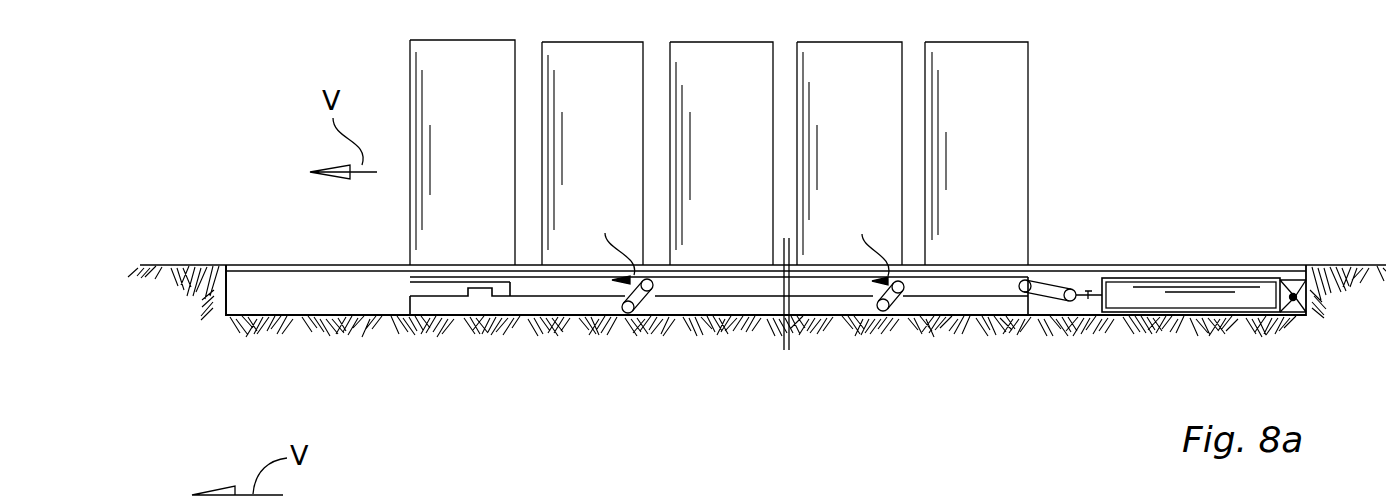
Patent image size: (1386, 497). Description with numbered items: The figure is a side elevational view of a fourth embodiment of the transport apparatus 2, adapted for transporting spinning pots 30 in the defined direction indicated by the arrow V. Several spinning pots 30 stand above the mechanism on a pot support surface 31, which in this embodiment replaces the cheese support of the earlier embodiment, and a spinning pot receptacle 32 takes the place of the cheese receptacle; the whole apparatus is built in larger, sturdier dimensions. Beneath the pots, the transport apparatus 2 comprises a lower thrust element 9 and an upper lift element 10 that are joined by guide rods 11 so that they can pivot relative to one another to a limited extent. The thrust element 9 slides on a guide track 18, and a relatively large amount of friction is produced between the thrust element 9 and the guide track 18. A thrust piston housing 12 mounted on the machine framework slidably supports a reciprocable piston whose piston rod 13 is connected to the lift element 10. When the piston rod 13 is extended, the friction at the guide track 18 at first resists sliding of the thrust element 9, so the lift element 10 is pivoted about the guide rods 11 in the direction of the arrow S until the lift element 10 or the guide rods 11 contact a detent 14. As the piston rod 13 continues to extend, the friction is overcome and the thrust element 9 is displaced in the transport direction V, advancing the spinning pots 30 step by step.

The transport apparatus 2 is at (757, 253).
The thrust element 9 is at (563, 303).
The lift element 10 is at (740, 285).
The guide rods 11 is at (649, 291).
The thrust piston housing 12 is at (1196, 285).
The piston rod 13 is at (1090, 298).
The detent 14 is at (477, 290).
The guide track 18 is at (306, 306).
The spinning pots 30 is at (481, 97).
The pot support surface 31 is at (1056, 268).
The spinning pot receptacle 32 is at (470, 258).